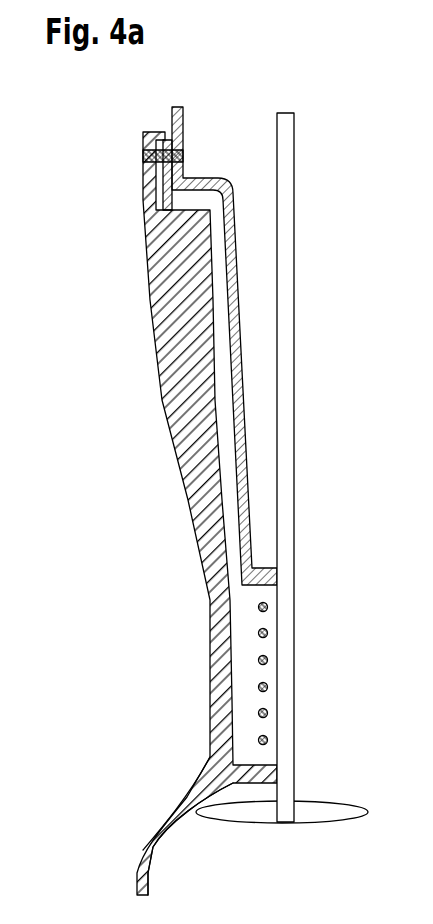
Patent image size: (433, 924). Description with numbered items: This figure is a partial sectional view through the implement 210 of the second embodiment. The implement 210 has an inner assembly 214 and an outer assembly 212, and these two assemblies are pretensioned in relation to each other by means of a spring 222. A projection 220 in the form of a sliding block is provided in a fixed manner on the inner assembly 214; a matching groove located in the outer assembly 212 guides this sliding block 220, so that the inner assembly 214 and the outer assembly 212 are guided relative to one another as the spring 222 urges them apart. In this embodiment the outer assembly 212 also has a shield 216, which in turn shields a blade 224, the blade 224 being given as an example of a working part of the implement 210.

The implement 210 is at (145, 513).
The outer assembly 212 is at (188, 390).
The inner assembly 214 is at (183, 130).
The shield 216 is at (155, 838).
The projection 220 is at (147, 157).
The spring 222 is at (258, 634).
The blade 224 is at (330, 816).